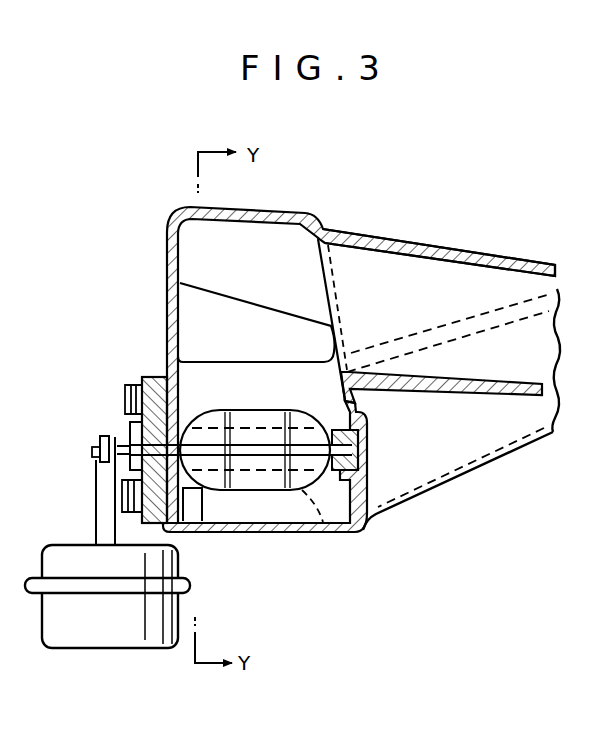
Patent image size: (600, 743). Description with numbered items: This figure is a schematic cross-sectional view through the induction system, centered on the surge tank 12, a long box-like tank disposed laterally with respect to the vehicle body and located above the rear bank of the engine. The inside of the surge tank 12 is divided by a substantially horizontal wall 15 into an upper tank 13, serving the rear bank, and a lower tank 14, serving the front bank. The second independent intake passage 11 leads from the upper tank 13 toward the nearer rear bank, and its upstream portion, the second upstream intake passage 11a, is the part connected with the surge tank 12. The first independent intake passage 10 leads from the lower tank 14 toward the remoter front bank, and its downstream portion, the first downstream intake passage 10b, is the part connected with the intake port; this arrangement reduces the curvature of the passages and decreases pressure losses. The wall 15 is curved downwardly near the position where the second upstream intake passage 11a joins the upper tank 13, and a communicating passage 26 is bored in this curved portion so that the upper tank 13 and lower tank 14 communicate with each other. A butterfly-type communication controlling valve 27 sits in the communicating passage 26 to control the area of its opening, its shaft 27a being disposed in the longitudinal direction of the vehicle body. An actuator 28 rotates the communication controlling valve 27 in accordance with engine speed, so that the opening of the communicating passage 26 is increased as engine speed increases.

The first independent intake passage 10 is at (486, 474).
The first downstream intake passage 10b is at (408, 478).
The second independent intake passage 11 is at (428, 243).
The second upstream intake passage 11a is at (492, 282).
The surge tank 12 is at (160, 243).
The upper tank 13 is at (290, 246).
The lower tank 14 is at (284, 514).
The wall 15 is at (238, 363).
The communicating passage 26 is at (323, 522).
The communication controlling valve 27 is at (256, 416).
The shaft 27a is at (150, 438).
The actuator 28 is at (47, 548).